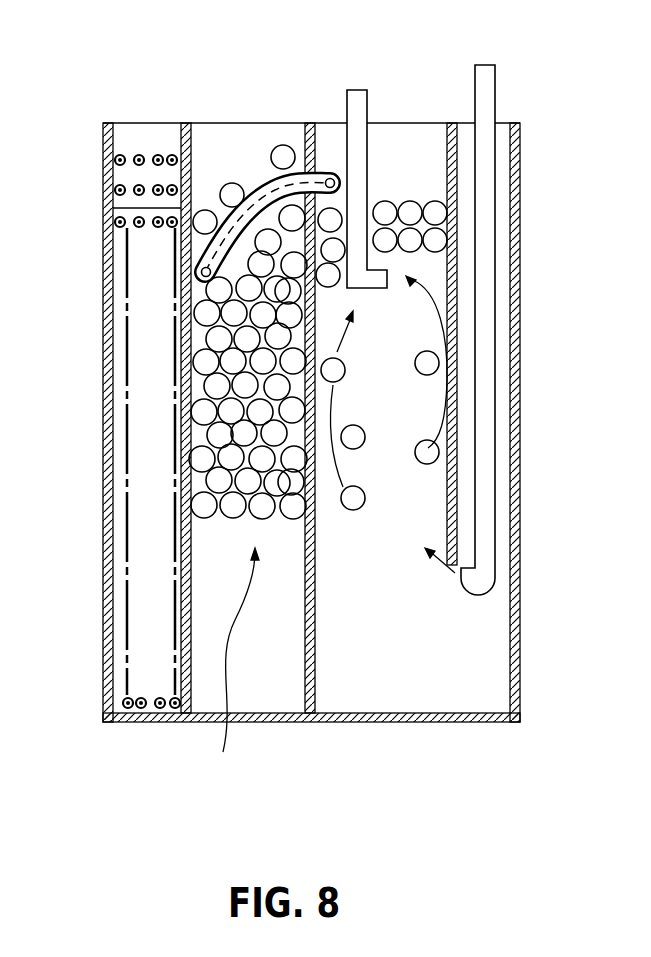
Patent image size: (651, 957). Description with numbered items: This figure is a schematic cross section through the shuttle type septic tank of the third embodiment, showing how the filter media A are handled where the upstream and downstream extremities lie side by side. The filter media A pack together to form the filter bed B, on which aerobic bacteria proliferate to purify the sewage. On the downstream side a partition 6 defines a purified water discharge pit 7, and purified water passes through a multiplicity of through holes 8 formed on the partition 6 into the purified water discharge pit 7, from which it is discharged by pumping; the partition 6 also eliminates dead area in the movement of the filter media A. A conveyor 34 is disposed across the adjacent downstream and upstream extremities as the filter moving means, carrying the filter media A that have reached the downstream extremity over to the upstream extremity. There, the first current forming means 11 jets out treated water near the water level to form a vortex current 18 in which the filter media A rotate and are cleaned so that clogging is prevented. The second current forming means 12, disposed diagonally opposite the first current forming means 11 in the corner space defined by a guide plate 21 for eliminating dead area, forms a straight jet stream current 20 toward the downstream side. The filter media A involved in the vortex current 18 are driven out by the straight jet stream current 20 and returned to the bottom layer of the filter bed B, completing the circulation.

The partition 6 is at (182, 383).
The purified water discharge pit 7 is at (162, 443).
The through holes 8 is at (157, 153).
The first current forming means 11 is at (363, 100).
The second current forming means 12 is at (487, 90).
The vortex current 18 is at (373, 510).
The straight jet stream current 20 is at (433, 562).
The guide plate 21 is at (456, 168).
The conveyor 34 is at (257, 178).
The filter media A is at (230, 183).
The filter bed B is at (235, 669).